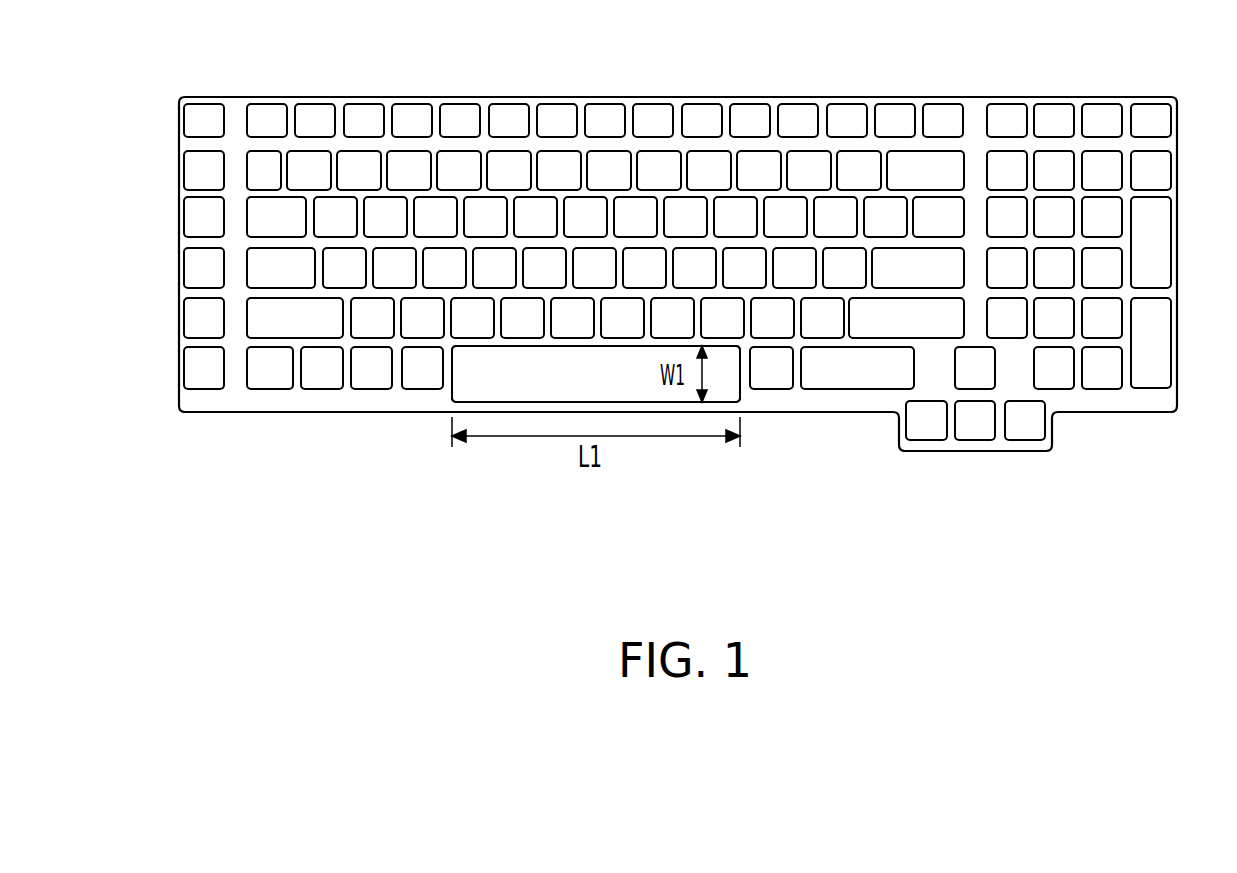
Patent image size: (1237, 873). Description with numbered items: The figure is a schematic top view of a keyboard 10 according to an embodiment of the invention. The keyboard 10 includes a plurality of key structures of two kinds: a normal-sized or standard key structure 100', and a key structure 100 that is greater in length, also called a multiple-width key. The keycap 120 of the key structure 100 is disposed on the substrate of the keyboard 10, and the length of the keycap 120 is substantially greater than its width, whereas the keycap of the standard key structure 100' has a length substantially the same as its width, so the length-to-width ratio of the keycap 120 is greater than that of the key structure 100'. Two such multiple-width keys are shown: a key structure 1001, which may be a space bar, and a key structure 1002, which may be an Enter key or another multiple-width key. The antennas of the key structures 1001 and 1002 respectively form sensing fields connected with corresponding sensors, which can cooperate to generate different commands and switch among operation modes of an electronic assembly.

The keyboard 10 is at (1223, 548).
The key structure 100 is at (725, 270).
The key structure 1001 is at (740, 389).
The key structure 1002 is at (927, 320).
The key structure 100' is at (856, 107).
The keycap 120 is at (458, 389).